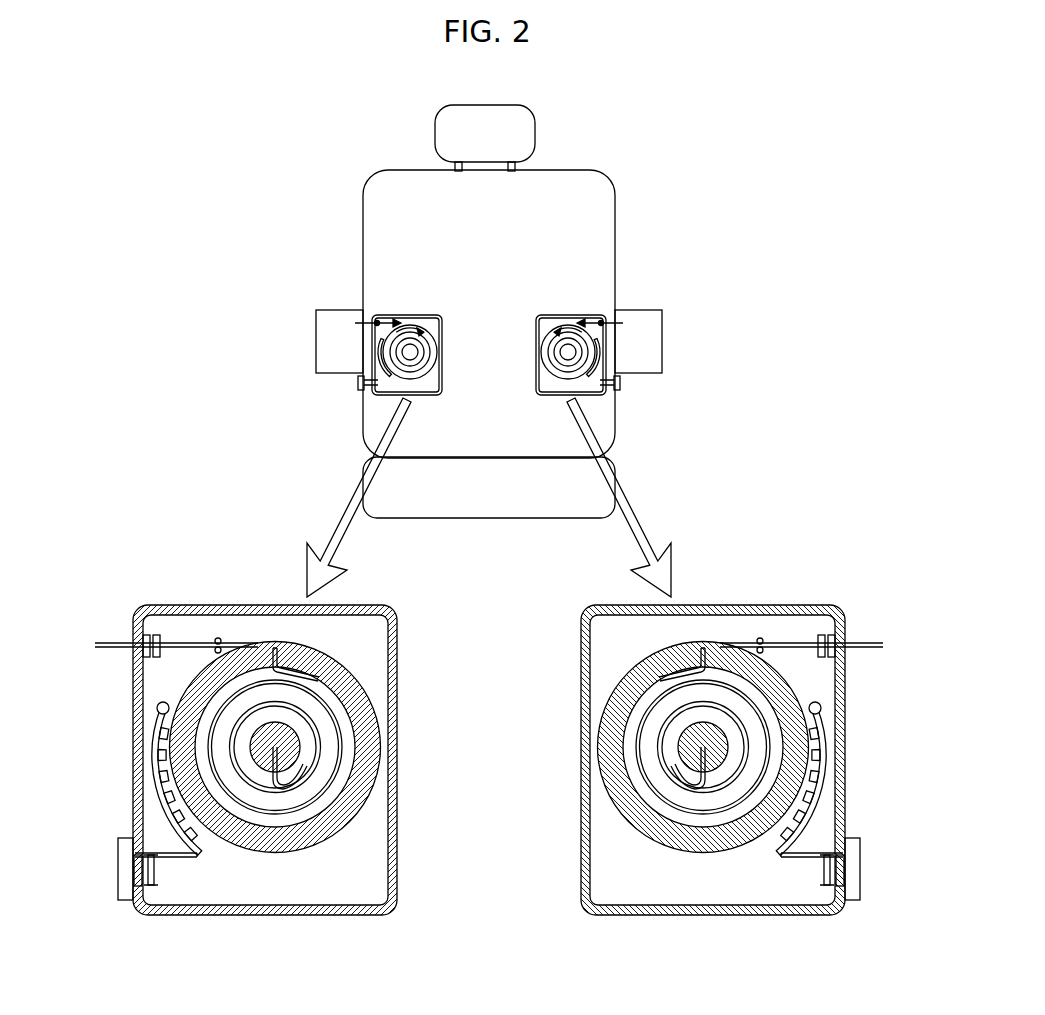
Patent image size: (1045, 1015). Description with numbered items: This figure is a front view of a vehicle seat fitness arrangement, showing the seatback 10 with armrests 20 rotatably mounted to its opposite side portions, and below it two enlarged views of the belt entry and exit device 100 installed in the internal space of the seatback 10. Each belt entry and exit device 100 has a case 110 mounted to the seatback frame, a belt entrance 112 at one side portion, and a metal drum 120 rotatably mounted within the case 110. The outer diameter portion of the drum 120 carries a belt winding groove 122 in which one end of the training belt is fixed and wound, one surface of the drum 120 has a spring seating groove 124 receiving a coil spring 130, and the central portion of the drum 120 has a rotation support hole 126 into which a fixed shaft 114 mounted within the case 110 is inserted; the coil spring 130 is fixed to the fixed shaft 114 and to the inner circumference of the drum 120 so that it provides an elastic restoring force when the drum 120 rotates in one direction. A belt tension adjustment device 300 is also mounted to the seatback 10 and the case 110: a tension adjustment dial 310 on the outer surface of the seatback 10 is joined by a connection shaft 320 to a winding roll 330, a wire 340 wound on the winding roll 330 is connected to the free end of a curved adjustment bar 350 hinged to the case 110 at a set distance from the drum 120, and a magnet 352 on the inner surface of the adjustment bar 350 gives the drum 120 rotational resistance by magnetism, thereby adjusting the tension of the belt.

The seatback 10 is at (598, 232).
The armrest 20 is at (488, 310).
The belt entry and exit device 100 is at (489, 546).
The case 110 is at (489, 715).
The belt entrance 112 is at (489, 621).
The fixed shaft 114 is at (489, 747).
The drum 120 is at (489, 716).
The belt winding groove 122 is at (489, 618).
The spring seating groove 124 is at (489, 747).
The rotation support hole 126 is at (489, 819).
The coil spring 130 is at (489, 747).
The belt tension adjustment device 300 is at (489, 917).
The tension adjustment dial 310 is at (489, 638).
The connection shaft 320 is at (489, 778).
The winding roll 330 is at (489, 902).
The wire 340 is at (489, 878).
The adjustment bar 350 is at (489, 755).
The magnet 352 is at (489, 810).